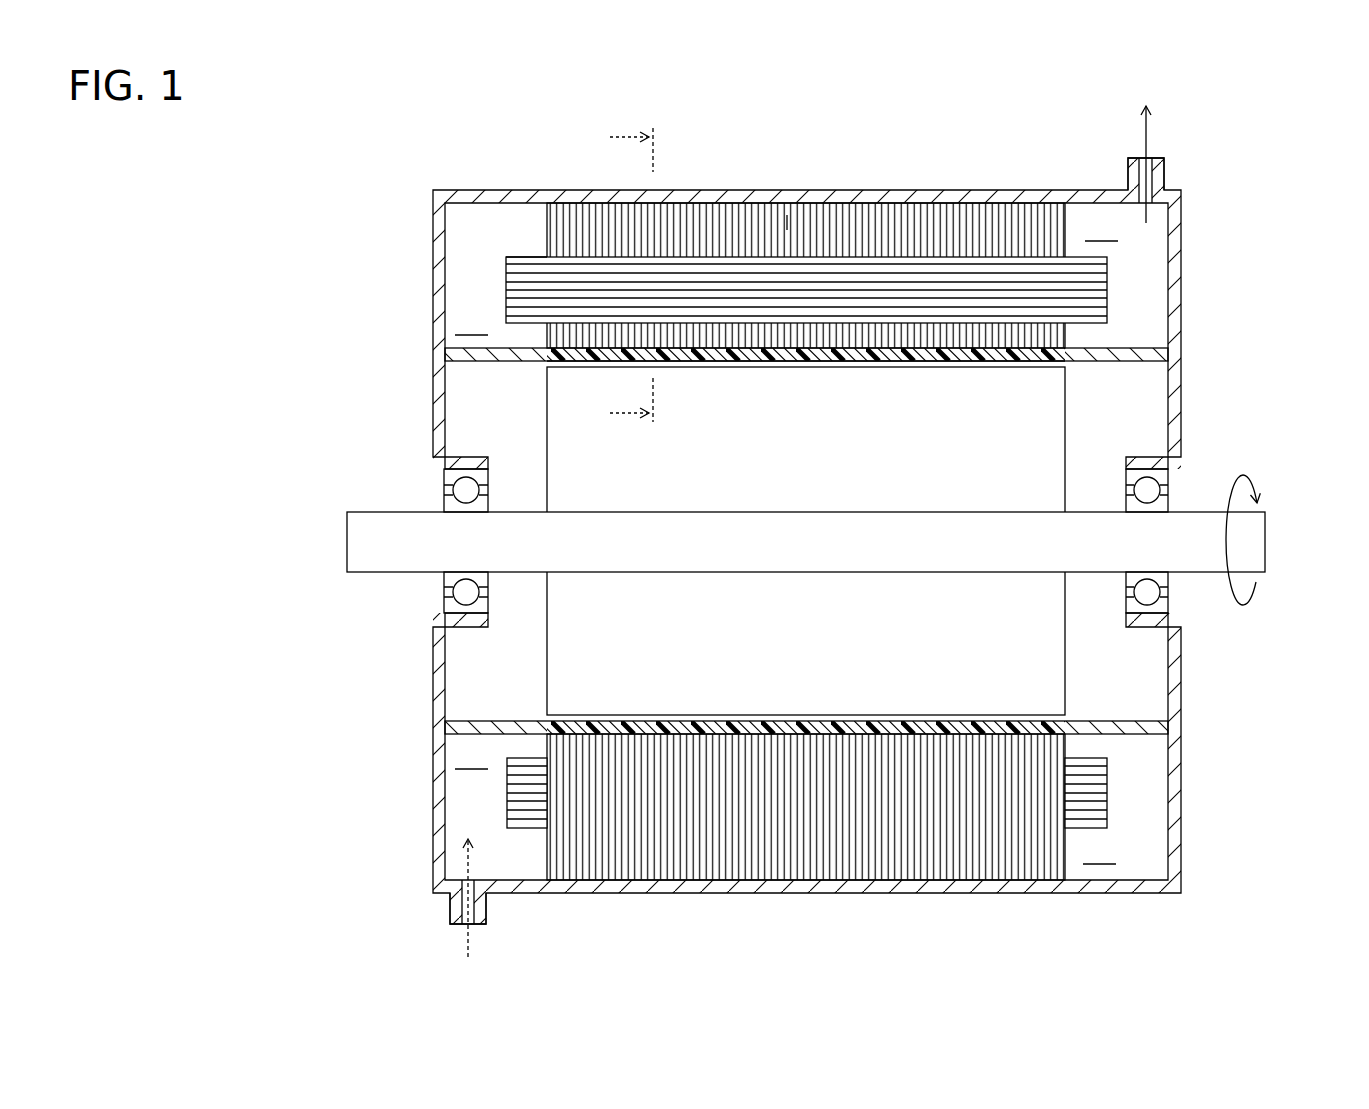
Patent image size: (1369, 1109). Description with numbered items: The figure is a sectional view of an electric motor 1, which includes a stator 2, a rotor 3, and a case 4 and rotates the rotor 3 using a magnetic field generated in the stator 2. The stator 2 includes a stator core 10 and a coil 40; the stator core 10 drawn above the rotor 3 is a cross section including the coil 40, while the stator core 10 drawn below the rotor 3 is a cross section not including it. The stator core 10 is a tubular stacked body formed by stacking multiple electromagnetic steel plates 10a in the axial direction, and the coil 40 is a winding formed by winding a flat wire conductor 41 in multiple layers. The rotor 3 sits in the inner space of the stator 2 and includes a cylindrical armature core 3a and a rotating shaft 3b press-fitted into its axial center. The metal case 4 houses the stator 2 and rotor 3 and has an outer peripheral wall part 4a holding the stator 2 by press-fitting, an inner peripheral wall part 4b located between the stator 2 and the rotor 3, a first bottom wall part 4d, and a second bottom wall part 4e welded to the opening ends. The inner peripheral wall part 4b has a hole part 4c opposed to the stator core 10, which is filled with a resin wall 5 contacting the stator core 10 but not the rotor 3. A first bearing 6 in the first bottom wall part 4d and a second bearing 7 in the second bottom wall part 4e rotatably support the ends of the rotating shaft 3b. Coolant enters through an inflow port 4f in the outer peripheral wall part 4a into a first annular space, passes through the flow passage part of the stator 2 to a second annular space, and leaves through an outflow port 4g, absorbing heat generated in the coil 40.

The electric motor 1 is at (312, 161).
The stator 2 is at (1128, 272).
The rotor 3 is at (1110, 641).
The armature core 3a is at (1067, 695).
The rotating shaft 3b is at (1265, 542).
The case 4 is at (915, 184).
The outer peripheral wall part 4a is at (1003, 190).
The inner peripheral wall part 4b is at (1146, 350).
The hole part 4c is at (1041, 355).
The first bottom wall part 4d is at (433, 690).
The second bottom wall part 4e is at (1181, 800).
The inflow port 4f is at (459, 923).
The outflow port 4g is at (1164, 160).
The resin wall 5 is at (1006, 359).
The first bearing 6 is at (444, 492).
The second bearing 7 is at (1170, 492).
The stator core 10 is at (545, 232).
The electromagnetic steel plate 10a is at (787, 215).
The coil 40 is at (504, 272).
The flat wire conductor 41 is at (517, 258).